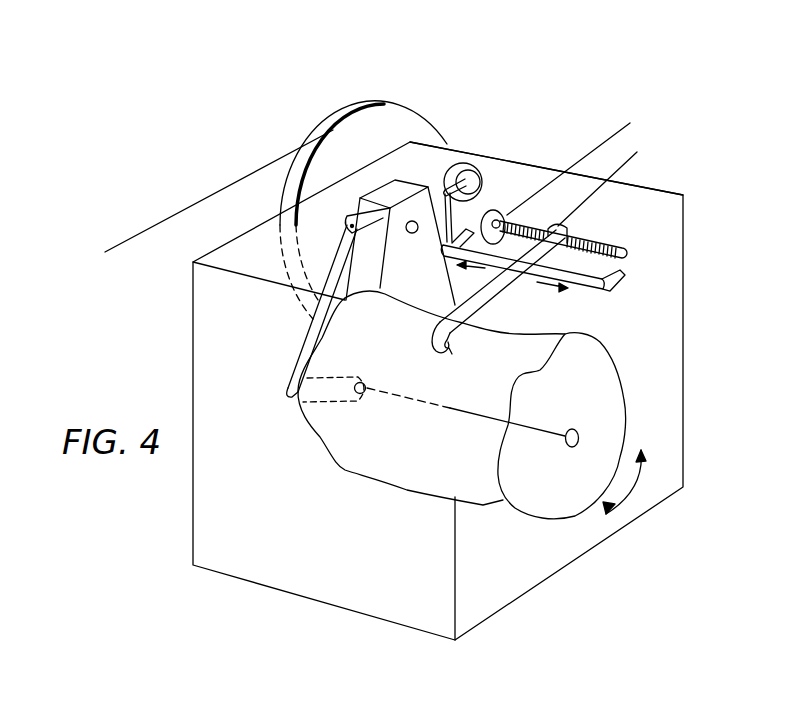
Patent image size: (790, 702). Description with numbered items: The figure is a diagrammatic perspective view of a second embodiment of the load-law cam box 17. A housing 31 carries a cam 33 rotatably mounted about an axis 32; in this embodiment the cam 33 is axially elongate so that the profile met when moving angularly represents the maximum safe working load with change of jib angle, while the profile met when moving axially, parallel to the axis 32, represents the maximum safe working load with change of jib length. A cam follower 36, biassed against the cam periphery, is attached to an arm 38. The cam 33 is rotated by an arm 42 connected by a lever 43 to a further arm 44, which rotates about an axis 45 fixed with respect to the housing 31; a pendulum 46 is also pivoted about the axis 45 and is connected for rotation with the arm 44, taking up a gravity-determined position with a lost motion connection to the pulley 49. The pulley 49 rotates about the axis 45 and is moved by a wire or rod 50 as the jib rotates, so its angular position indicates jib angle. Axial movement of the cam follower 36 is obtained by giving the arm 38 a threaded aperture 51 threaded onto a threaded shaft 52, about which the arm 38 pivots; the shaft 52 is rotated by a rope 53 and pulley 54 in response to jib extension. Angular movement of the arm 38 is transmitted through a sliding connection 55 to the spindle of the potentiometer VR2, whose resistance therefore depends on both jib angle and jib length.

The cam box 17 is at (690, 213).
The housing 31 is at (685, 312).
The axis 32 is at (571, 447).
The cam 33 is at (597, 363).
The cam follower 36 is at (447, 353).
The arm 38 is at (523, 283).
The arm 42 is at (323, 392).
The lever 43 is at (303, 332).
The further arm 44 is at (350, 222).
The axis 45 is at (413, 233).
The pendulum 46 is at (403, 187).
The pulley 49 is at (412, 122).
The wire or rod 50 is at (187, 205).
The threaded aperture 51 is at (567, 223).
The threaded shaft 52 is at (613, 240).
The rope 53 is at (608, 135).
The pulley 54 is at (512, 217).
The sliding connection 55 is at (482, 225).
The potentiometer VR2 is at (472, 170).